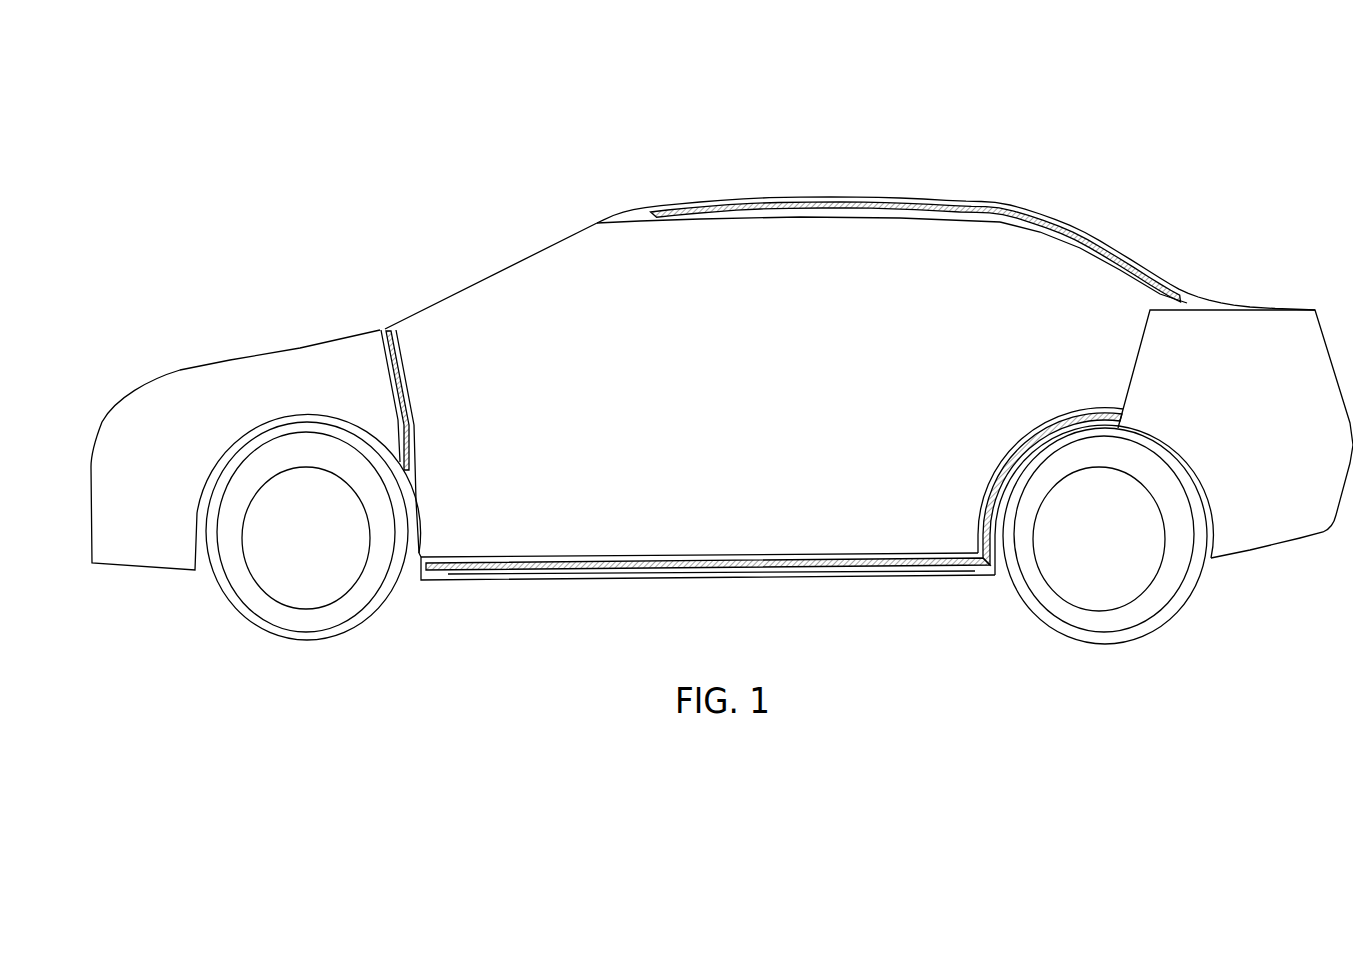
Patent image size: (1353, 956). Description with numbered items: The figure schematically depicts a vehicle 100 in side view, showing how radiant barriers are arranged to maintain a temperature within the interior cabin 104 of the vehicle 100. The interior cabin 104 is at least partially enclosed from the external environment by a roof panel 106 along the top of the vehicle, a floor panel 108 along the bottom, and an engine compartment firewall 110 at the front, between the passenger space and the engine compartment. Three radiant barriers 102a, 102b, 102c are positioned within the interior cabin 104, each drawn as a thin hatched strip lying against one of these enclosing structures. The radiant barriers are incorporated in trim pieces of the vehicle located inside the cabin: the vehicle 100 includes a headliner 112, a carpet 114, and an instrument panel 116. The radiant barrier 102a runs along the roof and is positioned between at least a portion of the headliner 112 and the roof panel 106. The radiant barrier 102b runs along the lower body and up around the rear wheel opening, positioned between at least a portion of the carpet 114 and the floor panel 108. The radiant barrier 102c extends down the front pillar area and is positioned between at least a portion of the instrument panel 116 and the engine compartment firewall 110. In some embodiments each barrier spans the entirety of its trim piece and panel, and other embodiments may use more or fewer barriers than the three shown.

The vehicle 100 is at (368, 118).
The radiant barrier 102a is at (648, 210).
The radiant barrier 102b is at (447, 575).
The radiant barrier 102c is at (383, 328).
The interior cabin 104 is at (1045, 272).
The roof panel 106 is at (1000, 204).
The floor panel 108 is at (953, 577).
The engine compartment firewall 110 is at (378, 345).
The headliner 112 is at (640, 224).
The carpet 114 is at (440, 557).
The instrument panel 116 is at (396, 331).